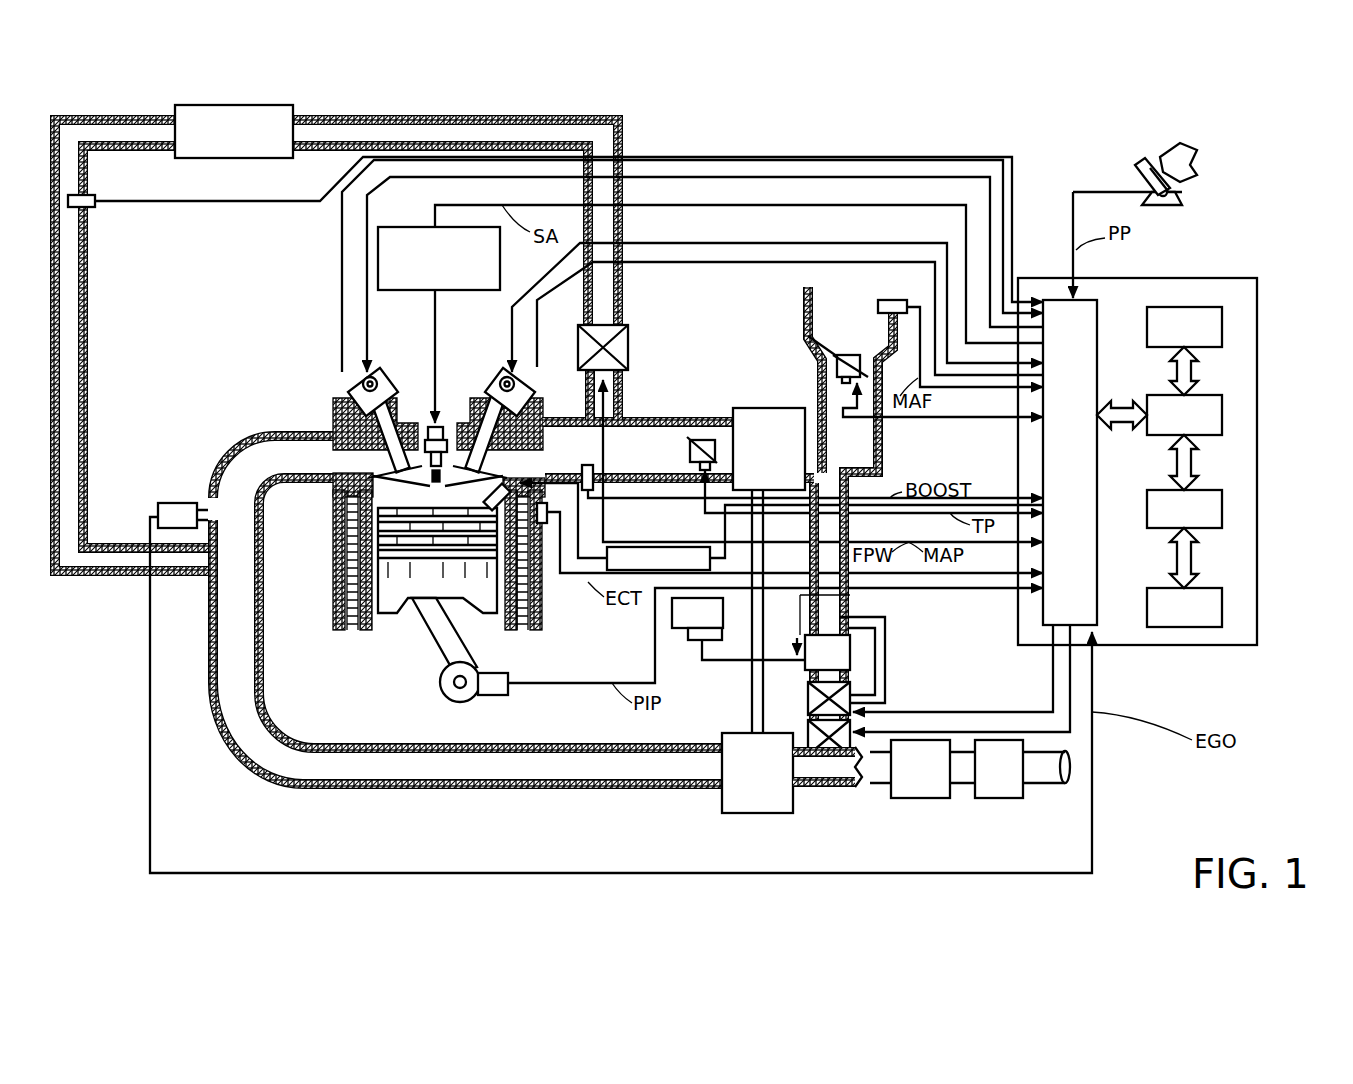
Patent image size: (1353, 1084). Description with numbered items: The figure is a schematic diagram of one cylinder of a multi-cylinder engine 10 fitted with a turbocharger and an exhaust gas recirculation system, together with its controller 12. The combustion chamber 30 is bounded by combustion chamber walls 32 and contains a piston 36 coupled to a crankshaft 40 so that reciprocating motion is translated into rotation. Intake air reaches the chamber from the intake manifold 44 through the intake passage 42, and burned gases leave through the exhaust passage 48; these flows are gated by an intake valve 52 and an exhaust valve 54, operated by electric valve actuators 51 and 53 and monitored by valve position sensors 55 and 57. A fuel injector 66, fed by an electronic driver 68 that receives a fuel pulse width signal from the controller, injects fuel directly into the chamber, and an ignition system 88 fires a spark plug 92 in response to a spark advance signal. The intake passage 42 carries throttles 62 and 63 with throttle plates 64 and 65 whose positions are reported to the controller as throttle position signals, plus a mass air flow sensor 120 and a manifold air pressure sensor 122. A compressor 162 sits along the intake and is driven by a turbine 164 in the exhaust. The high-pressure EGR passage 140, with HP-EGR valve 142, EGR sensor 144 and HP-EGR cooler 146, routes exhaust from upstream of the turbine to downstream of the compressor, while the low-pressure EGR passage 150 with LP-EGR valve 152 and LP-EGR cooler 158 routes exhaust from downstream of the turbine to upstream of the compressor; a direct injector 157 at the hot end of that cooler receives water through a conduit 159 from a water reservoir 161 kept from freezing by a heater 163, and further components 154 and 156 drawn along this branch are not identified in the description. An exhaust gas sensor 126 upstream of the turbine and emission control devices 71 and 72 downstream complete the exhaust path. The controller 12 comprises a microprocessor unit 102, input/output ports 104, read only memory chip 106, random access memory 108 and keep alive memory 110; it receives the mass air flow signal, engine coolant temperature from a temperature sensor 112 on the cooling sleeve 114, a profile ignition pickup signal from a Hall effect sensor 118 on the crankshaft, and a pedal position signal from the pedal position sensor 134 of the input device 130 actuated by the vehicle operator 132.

The engine 10 is at (262, 355).
The controller 12 is at (1185, 450).
The combustion chamber 30 is at (410, 497).
The combustion chamber walls 32 is at (378, 630).
The piston 36 is at (420, 585).
The crankshaft 40 is at (450, 700).
The intake passage 42 is at (850, 517).
The intake manifold 44 is at (678, 424).
The exhaust passage 48 is at (467, 610).
The electric valve actuator 51 is at (507, 368).
The intake valve 52 is at (480, 476).
The electric valve actuator 53 is at (372, 368).
The exhaust valve 54 is at (375, 455).
The valve position sensor 55 is at (528, 384).
The valve position sensor 57 is at (360, 380).
The throttle 62 is at (700, 445).
The throttle 63 is at (816, 347).
The throttle plate 64 is at (690, 460).
The throttle plate 65 is at (837, 366).
The fuel injector 66 is at (492, 501).
The electronic driver 68 is at (825, 537).
The emission control device 71 is at (920, 769).
The emission control device 72 is at (999, 769).
The ignition system 88 is at (405, 198).
The spark plug 92 is at (437, 420).
The microprocessor unit 102 is at (1222, 412).
The input/output ports 104 is at (1097, 305).
The read only memory chip 106 is at (1222, 323).
The random access memory 108 is at (1222, 510).
The keep alive memory 110 is at (1222, 607).
The temperature sensor 112 is at (547, 525).
The cooling sleeve 114 is at (540, 600).
The Hall effect sensor 118 is at (493, 695).
The mass air flow sensor 120 is at (908, 282).
The manifold air pressure sensor 122 is at (588, 470).
The exhaust gas sensor 126 is at (158, 507).
The input device 130 is at (1143, 170).
The vehicle operator 132 is at (1197, 163).
The pedal position sensor 134 is at (1185, 198).
The high-pressure EGR passage 140 is at (514, 116).
The HP-EGR valve 142 is at (616, 345).
The EGR sensor 144 is at (92, 207).
The HP-EGR cooler 146 is at (234, 131).
The low-pressure EGR passage 150 is at (840, 596).
The LP-EGR valve 152 is at (812, 738).
The bypass passage 154 is at (886, 690).
The valve 156 is at (812, 700).
The direct injector 157 is at (753, 646).
The LP-EGR cooler 158 is at (827, 652).
The conduit 159 is at (742, 662).
The water reservoir 161 is at (697, 619).
The compressor 162 is at (769, 570).
The heater 163 is at (702, 648).
The turbine 164 is at (757, 773).